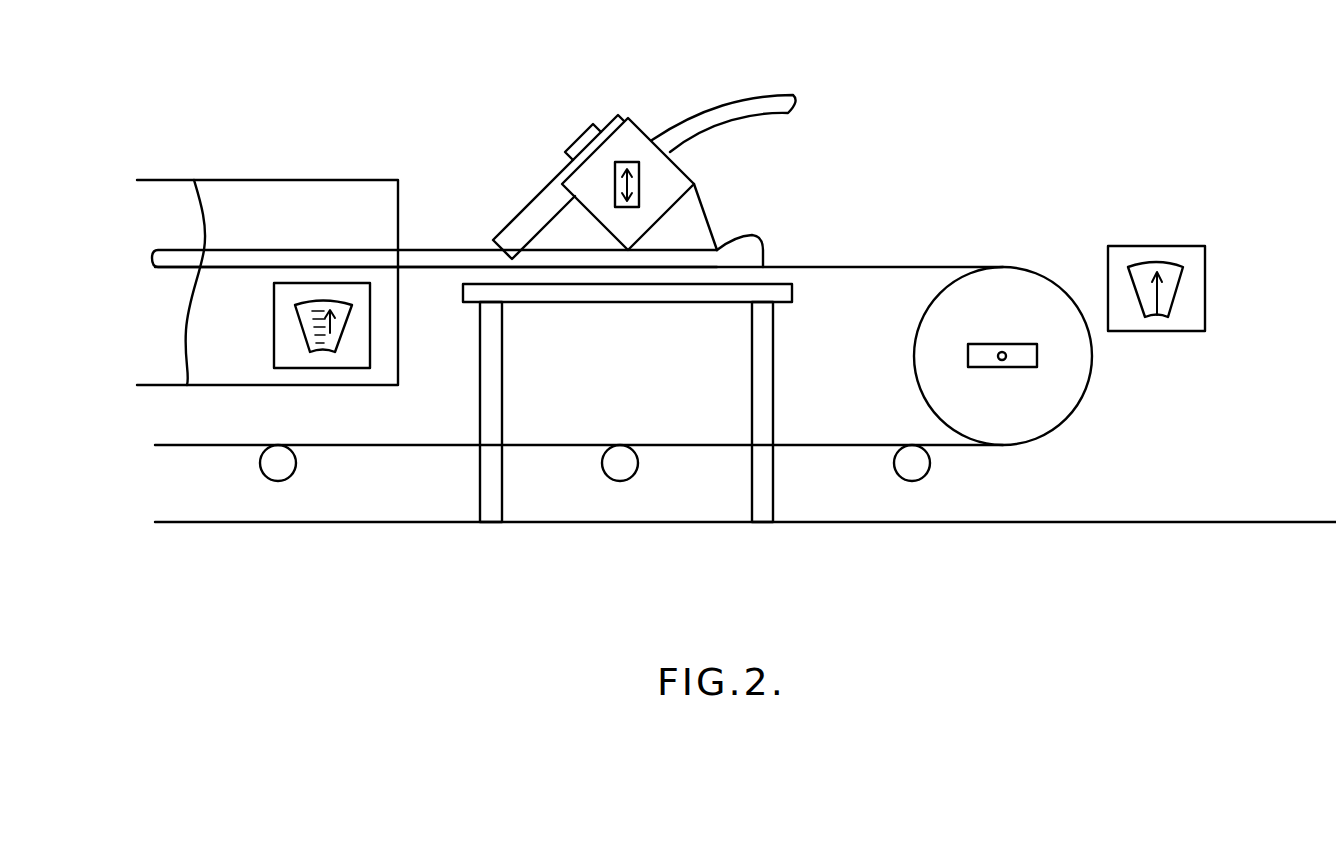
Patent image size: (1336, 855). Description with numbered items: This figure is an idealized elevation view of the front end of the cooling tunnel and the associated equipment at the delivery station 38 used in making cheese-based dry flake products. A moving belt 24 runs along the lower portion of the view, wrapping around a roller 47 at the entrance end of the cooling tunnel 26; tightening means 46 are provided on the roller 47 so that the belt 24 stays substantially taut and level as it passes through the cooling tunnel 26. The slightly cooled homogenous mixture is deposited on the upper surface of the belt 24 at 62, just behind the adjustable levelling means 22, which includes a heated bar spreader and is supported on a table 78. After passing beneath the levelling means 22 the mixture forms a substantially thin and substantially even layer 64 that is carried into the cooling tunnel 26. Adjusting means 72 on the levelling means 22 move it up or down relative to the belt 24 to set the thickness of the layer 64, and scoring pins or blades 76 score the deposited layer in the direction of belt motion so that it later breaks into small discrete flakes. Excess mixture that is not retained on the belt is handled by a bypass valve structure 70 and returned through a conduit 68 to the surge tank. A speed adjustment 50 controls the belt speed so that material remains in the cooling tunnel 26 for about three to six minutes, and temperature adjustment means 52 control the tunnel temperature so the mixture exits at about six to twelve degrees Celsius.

The adjustable levelling means 22 is at (682, 158).
The moving belt 24 is at (895, 263).
The cooling tunnel 26 is at (290, 203).
The delivery station 38 is at (1047, 194).
The tightening means 46 is at (1020, 343).
The roller 47 is at (948, 407).
The speed adjustment 50 is at (1140, 300).
The temperature adjustment means 52 is at (290, 337).
The deposit location 62 is at (755, 253).
The substantially thin and substantially even layer 64 is at (433, 250).
The conduit 68 is at (722, 112).
The bypass valve structure 70 is at (675, 238).
The adjusting means 72 is at (639, 184).
The scoring pins or blades 76 is at (517, 227).
The table 78 is at (672, 303).